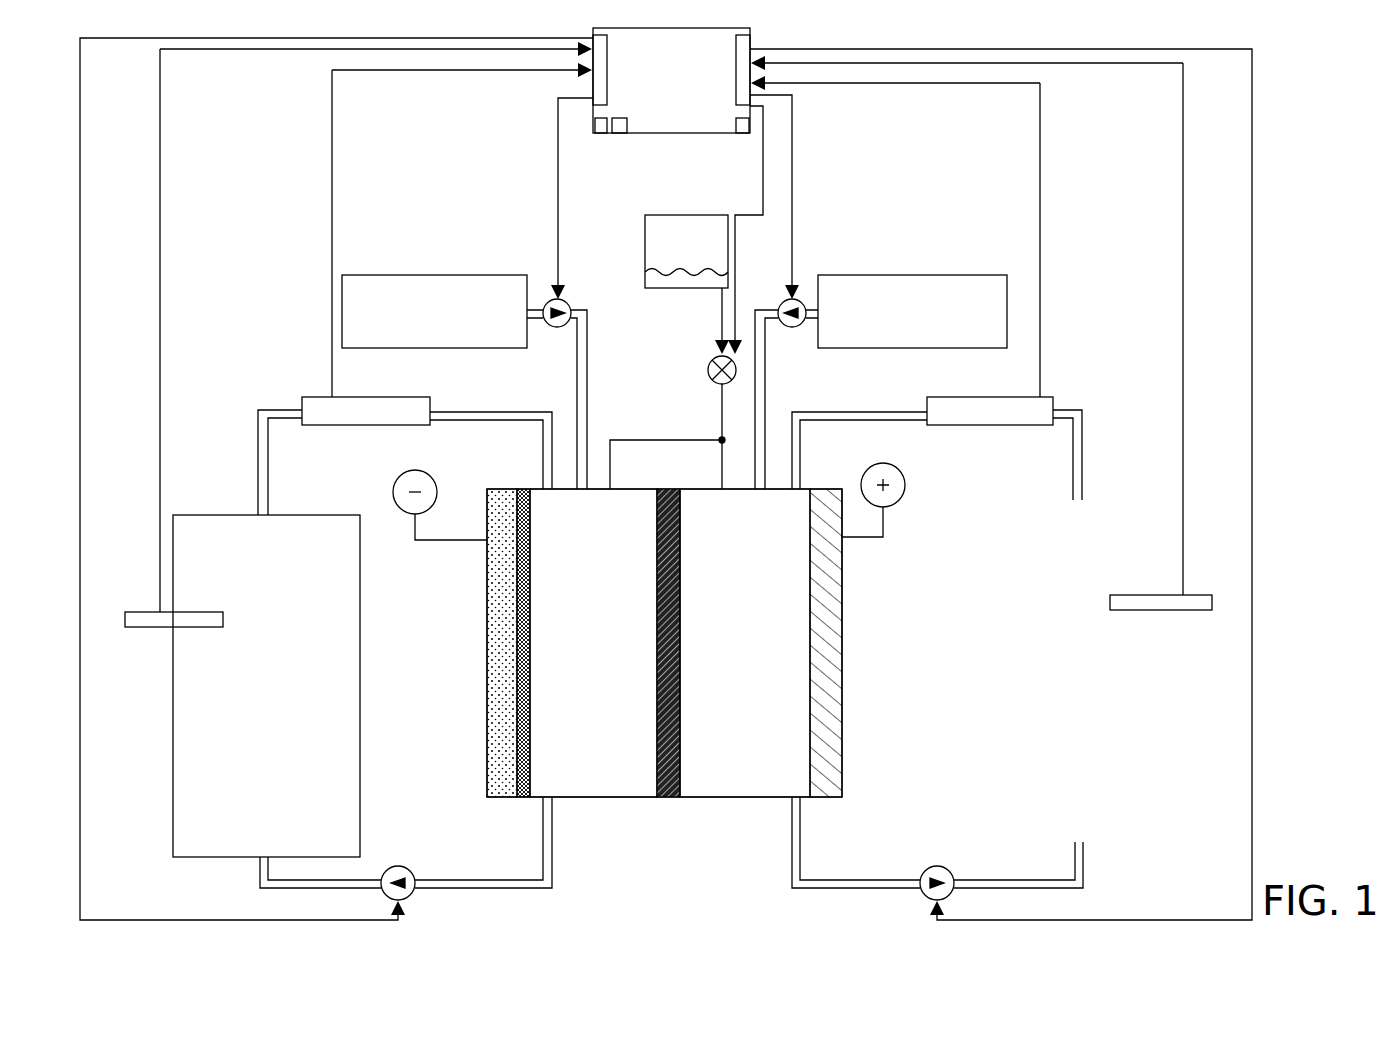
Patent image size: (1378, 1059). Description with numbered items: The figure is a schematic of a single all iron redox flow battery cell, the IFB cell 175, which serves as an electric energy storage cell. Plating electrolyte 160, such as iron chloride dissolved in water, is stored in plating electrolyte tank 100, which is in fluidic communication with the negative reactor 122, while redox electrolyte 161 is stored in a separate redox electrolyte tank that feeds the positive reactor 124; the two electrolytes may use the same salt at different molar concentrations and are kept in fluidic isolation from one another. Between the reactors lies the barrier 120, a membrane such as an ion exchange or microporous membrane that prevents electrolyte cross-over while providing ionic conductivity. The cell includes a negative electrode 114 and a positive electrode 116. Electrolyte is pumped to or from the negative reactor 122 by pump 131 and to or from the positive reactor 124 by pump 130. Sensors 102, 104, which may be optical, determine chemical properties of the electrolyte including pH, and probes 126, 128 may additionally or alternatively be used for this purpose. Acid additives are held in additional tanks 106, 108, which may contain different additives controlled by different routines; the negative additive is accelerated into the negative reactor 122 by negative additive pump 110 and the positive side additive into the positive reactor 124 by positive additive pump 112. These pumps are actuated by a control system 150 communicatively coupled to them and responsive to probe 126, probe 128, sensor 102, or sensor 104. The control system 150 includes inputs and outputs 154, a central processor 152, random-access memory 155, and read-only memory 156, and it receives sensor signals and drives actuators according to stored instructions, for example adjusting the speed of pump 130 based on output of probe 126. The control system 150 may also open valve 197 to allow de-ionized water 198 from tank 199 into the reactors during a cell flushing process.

The plating electrolyte tank 100 is at (266, 686).
The sensor 102 is at (446, 247).
The sensor 104 is at (903, 254).
The additional tank 106 is at (442, 311).
The additional tank 108 is at (906, 311).
The negative additive pump 110 is at (551, 327).
The positive additive pump 112 is at (794, 327).
The negative electrode 114 is at (487, 636).
The positive electrode 116 is at (842, 636).
The barrier 120 is at (664, 797).
The negative reactor 122 is at (593, 643).
The positive reactor 124 is at (745, 643).
The probe 126 is at (1195, 595).
The probe 128 is at (142, 612).
The pump 130 is at (1078, 787).
The pump 131 is at (405, 866).
The control system 150 is at (593, 30).
The central processor 152 is at (601, 133).
The inputs and outputs 154 is at (752, 34).
The random-access memory 155 is at (618, 133).
The read-only memory 156 is at (745, 133).
The plating electrolyte 160 is at (232, 696).
The redox electrolyte 161 is at (1120, 718).
The IFB cell 175 is at (671, 414).
The valve 197 is at (710, 366).
The de-ionized water 198 is at (648, 278).
The tank 199 is at (686, 258).